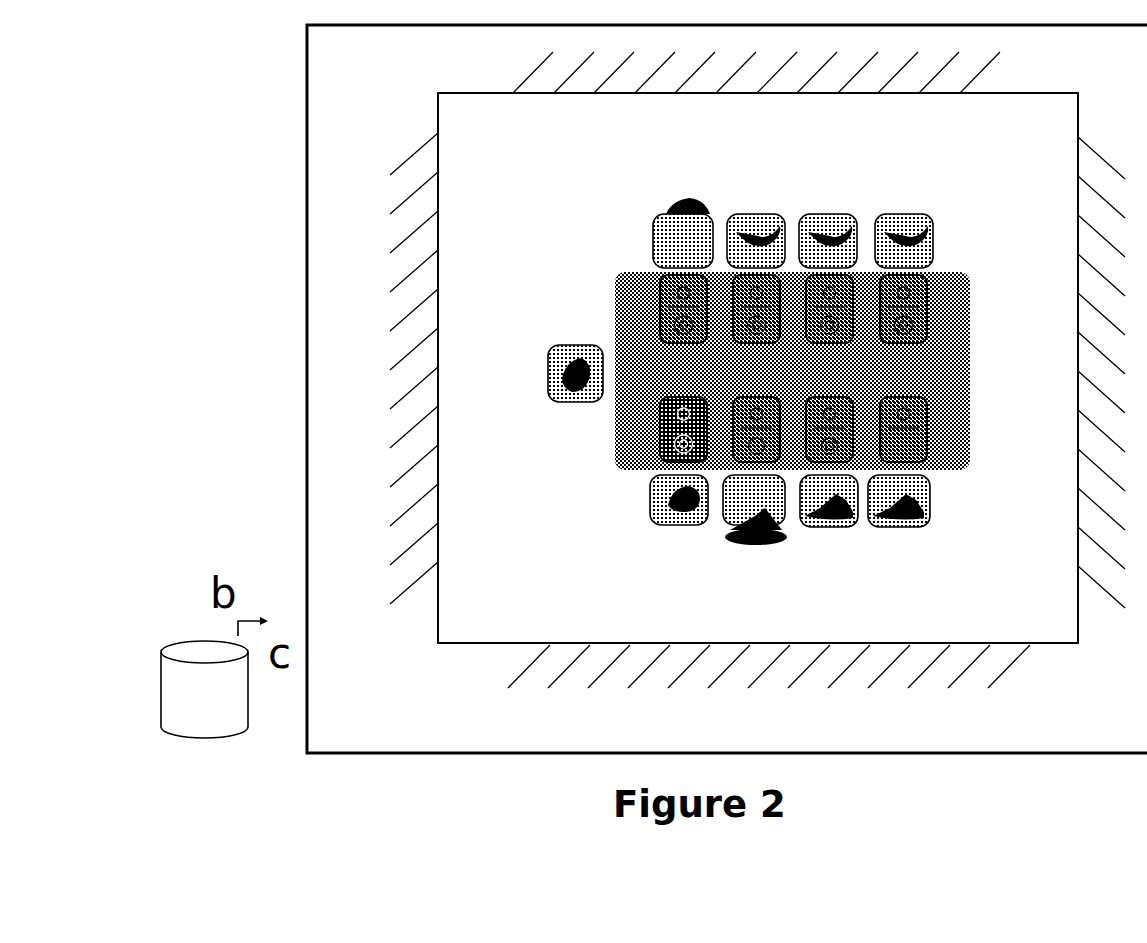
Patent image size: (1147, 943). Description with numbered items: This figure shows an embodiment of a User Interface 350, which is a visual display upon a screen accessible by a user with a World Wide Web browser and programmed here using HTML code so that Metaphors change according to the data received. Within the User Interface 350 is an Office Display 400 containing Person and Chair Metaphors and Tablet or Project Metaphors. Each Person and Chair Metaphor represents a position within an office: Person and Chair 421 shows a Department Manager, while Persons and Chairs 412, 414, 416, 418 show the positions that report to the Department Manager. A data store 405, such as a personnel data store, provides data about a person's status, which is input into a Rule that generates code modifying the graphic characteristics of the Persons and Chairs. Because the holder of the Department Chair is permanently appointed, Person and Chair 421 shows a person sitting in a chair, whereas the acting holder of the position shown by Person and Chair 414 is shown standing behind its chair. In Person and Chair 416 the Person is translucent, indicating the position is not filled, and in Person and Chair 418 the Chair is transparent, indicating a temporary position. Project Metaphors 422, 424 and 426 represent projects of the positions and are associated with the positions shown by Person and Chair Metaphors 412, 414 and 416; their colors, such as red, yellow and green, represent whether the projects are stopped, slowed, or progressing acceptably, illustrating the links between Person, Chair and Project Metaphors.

The User Interface 350 is at (423, 717).
The Office Display 400 is at (430, 360).
The data store 405 is at (205, 738).
The Person and Chair Metaphor 412 is at (676, 530).
The Person and Chair Metaphor 414 is at (783, 535).
The Person and Chair Metaphor 416 is at (700, 196).
The Person and Chair Metaphor 418 is at (937, 228).
The Person and Chair Metaphor 421 is at (572, 345).
The Project Metaphor 422 is at (660, 440).
The Project Metaphor 424 is at (930, 432).
The Project Metaphor 426 is at (658, 315).